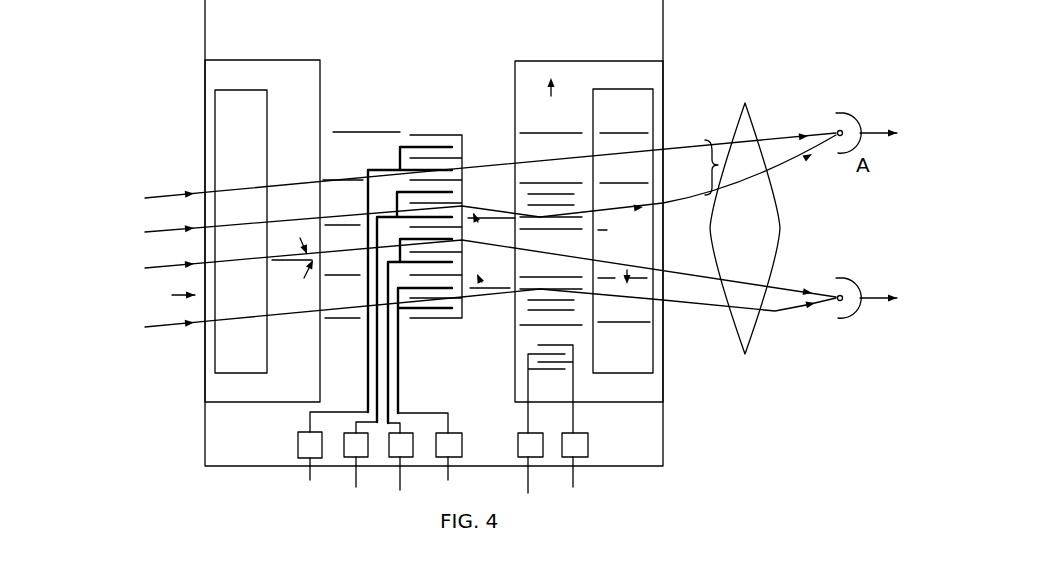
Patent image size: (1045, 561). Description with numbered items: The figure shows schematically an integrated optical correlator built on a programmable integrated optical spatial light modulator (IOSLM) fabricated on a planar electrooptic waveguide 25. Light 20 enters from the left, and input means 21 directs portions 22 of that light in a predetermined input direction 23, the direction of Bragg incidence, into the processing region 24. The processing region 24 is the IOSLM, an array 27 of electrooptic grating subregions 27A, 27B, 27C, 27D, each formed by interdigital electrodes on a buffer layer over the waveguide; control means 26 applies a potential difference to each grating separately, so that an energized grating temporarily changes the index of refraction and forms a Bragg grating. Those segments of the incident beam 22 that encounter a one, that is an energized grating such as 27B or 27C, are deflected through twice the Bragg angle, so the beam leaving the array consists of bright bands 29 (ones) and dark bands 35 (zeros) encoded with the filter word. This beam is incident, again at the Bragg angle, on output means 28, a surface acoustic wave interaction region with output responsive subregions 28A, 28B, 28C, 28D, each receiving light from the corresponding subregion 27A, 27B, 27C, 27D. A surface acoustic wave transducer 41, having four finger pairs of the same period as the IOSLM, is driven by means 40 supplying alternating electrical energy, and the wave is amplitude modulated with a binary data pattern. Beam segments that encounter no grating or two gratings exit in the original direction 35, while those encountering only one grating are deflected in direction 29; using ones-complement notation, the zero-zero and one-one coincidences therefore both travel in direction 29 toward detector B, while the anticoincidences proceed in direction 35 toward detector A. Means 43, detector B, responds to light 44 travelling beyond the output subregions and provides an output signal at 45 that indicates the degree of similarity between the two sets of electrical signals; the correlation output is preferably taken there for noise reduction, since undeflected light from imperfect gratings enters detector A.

The light 20 is at (190, 190).
The input means 21 is at (262, 50).
The portions of the entering light 22 is at (310, 180).
The predetermined input direction 23 is at (294, 264).
The processing region 24 is at (446, 96).
The waveguide 25 is at (431, 45).
The control means 26 is at (436, 485).
The subregions / electrooptic grating array 27 is at (404, 128).
The subregion 27A is at (366, 146).
The subregion 27B is at (343, 192).
The subregion 27C is at (342, 238).
The subregion 27D is at (342, 296).
The output means 28 is at (578, 56).
The output responsive subregion 28A is at (624, 154).
The output responsive subregion 28B is at (623, 194).
The output responsive subregion 28C is at (622, 253).
The output responsive subregion 28D is at (624, 325).
The first selected output direction / deflected beam 29 is at (494, 184).
The second selected output direction / undeflected beam 35 is at (503, 166).
The means for providing an electric field 40 is at (550, 482).
The surface acoustic wave transducer 41 is at (563, 372).
The light responsive means (detector B) 43 is at (834, 312).
The light travelling beyond the output responsive subregions 44 is at (800, 300).
The output signal 45 is at (880, 290).